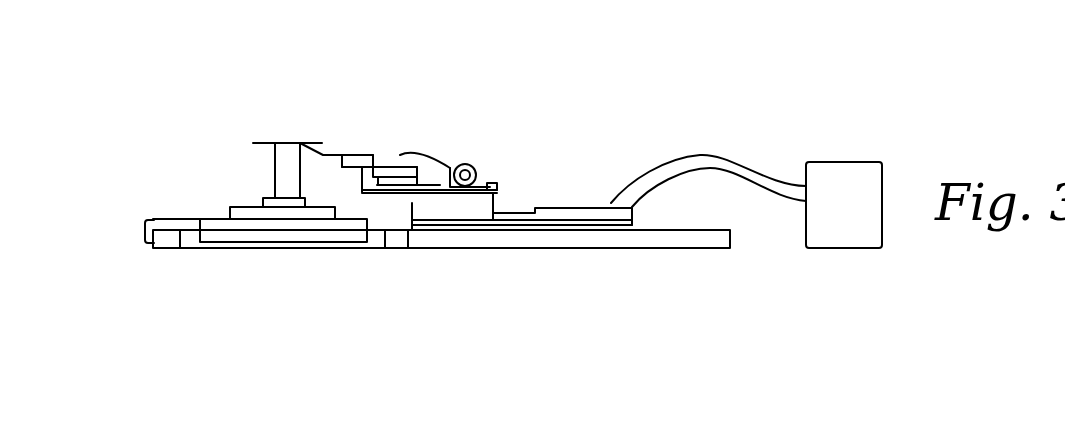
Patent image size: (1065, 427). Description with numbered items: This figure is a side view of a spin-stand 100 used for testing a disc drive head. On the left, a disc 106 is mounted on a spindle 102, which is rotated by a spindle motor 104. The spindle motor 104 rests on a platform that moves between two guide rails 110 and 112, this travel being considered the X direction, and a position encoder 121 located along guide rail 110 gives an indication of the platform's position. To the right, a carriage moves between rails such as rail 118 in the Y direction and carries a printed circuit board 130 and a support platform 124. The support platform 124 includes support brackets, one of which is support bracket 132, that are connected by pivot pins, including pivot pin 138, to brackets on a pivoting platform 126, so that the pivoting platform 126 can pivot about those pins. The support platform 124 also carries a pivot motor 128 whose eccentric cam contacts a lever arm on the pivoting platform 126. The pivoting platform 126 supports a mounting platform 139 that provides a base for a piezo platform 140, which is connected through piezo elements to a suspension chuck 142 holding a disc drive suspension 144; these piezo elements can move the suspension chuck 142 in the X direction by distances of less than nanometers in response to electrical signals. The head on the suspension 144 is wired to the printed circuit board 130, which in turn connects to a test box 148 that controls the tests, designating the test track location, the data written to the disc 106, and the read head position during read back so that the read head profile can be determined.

The spin-stand 100 is at (510, 153).
The spindle 102 is at (275, 157).
The spindle motor 104 is at (262, 200).
The disc 106 is at (252, 143).
The guide rail 110 is at (155, 242).
The guide rail 112 is at (400, 237).
The rail 118 is at (718, 237).
The position encoder 121 is at (150, 220).
The support platform 124 is at (497, 182).
The pivoting platform 126 is at (437, 162).
The pivot motor 128 is at (472, 163).
The printed circuit board 130 is at (572, 207).
The support bracket 132 is at (420, 152).
The pivot pin 138 is at (386, 113).
The mounting platform 139 is at (408, 152).
The piezo platform 140 is at (385, 155).
The suspension chuck 142 is at (346, 120).
The disc drive suspension 144 is at (347, 121).
The test box 148 is at (845, 168).